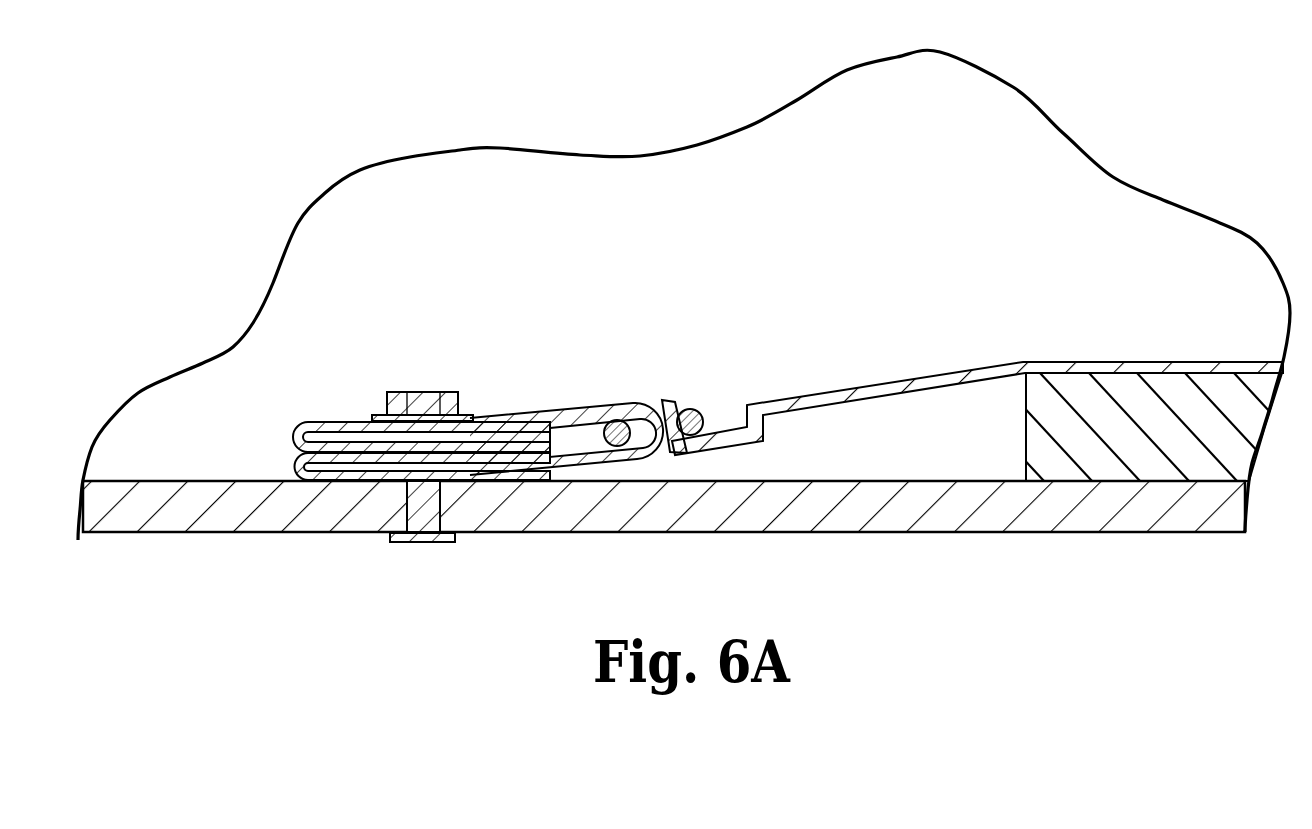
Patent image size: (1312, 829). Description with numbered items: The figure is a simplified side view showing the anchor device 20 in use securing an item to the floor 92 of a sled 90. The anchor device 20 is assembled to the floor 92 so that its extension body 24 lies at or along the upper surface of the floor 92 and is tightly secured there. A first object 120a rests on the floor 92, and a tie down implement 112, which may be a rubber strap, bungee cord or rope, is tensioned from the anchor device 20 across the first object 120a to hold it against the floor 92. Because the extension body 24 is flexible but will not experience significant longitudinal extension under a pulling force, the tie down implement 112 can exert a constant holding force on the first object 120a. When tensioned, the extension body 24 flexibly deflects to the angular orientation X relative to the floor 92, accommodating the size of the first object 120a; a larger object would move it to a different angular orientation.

The sled 90 is at (993, 160).
The floor 92 is at (941, 511).
The anchor device 20 is at (347, 398).
The extension body 24 is at (541, 408).
The tie down implement 112 is at (925, 371).
The first object 120a is at (1092, 452).
The angular orientation X is at (620, 474).